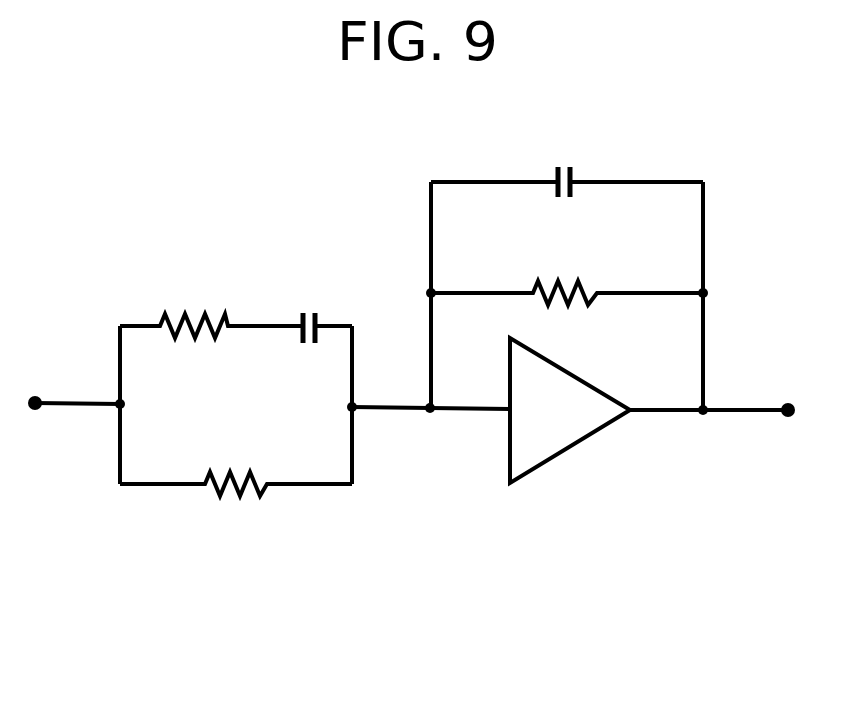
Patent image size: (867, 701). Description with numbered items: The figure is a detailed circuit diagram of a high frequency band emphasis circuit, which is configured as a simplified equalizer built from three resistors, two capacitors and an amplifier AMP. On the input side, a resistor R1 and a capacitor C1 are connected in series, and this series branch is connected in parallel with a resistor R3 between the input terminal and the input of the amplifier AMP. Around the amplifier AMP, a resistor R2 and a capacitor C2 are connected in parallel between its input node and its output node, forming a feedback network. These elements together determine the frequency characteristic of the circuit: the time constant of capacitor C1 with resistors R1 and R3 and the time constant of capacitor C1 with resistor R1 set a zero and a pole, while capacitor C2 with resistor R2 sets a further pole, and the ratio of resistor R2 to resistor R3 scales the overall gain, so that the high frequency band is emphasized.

The resistor R1 is at (211, 302).
The capacitor C1 is at (324, 305).
The resistor R3 is at (236, 458).
The capacitor C2 is at (567, 160).
The resistor R2 is at (567, 267).
The amplifier AMP is at (570, 410).